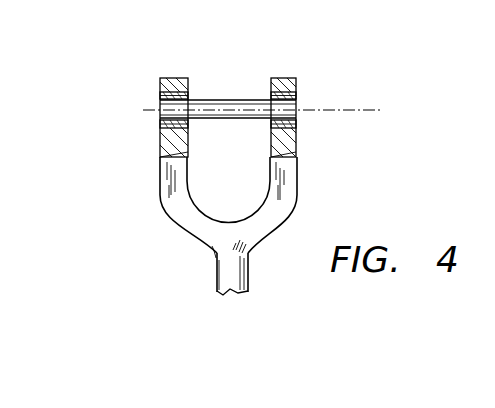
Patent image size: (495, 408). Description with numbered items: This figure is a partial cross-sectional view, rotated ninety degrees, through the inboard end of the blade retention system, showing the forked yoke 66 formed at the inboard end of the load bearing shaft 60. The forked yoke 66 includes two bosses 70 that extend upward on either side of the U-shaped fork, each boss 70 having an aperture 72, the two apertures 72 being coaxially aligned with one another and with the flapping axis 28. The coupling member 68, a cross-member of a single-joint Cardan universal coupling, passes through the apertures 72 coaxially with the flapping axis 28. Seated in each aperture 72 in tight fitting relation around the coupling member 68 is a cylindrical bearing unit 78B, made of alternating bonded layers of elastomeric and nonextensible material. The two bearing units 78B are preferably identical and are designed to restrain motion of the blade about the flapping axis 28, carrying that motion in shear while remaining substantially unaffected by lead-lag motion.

The flapping axis 28 is at (325, 108).
The load bearing shaft 60 is at (248, 272).
The forked yoke 66 is at (294, 206).
The coupling member 68 is at (233, 100).
The boss 70 is at (177, 168).
The aperture 72 is at (162, 128).
The bearing unit 78B is at (164, 95).